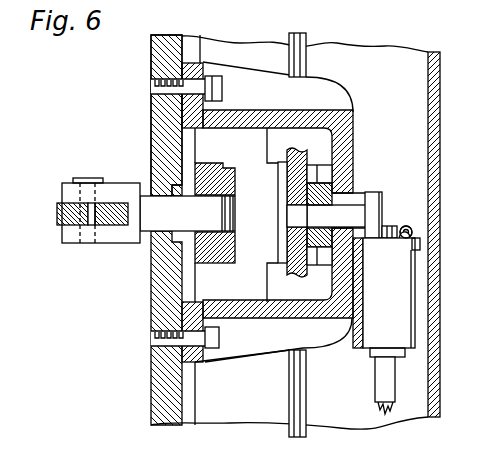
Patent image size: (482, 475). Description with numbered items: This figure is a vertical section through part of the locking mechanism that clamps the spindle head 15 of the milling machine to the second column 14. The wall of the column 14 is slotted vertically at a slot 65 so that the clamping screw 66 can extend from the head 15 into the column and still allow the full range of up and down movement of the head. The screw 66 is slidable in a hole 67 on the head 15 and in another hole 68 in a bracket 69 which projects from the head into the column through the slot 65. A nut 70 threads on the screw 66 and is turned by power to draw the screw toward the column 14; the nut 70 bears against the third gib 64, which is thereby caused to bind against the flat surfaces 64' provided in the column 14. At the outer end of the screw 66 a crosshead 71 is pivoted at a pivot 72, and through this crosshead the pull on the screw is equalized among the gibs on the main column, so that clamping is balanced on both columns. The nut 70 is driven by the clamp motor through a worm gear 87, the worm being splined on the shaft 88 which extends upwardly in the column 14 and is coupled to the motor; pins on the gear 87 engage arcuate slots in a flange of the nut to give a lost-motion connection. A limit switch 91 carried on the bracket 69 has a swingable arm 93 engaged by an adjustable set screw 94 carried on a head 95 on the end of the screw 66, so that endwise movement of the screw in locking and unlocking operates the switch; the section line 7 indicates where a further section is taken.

The section line 7- 7 is at (258, 140).
The second column 14 is at (440, 78).
The spindle head 15 is at (151, 129).
The third gib 64 is at (216, 200).
The flat surfaces 64' is at (242, 385).
The slot 65 is at (190, 385).
The clamping screw 66 is at (253, 213).
The hole 67 is at (157, 236).
The hole 68 is at (353, 188).
The bracket 69 is at (353, 116).
The nut 70 is at (252, 243).
The crosshead 71 is at (58, 218).
The pivot 72 is at (87, 178).
The worm gear 87 is at (290, 170).
The shaft 88 is at (307, 60).
The limit switch 91 is at (407, 323).
The swingable arm 93 is at (403, 258).
The adjustable set screw 94 is at (398, 225).
The head 95 is at (381, 194).